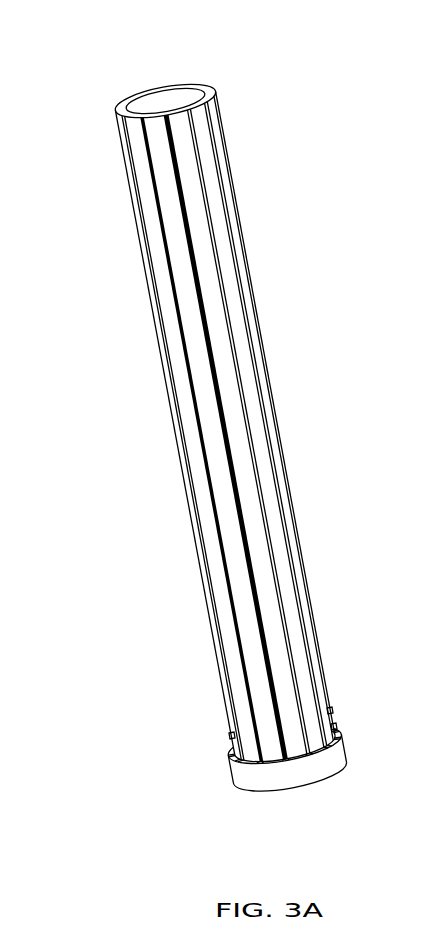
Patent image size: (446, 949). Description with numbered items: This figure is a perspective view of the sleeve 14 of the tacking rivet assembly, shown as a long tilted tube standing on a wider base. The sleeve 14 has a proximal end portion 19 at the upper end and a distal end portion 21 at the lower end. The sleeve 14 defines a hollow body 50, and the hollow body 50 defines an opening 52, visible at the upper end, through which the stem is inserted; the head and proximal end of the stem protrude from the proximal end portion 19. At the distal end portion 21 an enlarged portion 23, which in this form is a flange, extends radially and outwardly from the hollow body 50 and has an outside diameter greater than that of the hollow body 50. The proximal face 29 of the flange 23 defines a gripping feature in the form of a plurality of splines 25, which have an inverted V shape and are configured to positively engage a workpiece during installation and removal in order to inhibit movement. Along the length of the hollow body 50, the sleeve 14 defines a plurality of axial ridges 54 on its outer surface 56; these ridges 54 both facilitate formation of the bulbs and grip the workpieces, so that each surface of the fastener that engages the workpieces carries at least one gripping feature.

The sleeve 14 is at (295, 87).
The proximal end portion 19 is at (113, 117).
The distal end portion 21 is at (226, 759).
The enlarged portion 23 is at (337, 752).
The splines 25 is at (232, 735).
The proximal face 29 is at (300, 760).
The hollow body 50 is at (247, 385).
The opening 52 is at (162, 104).
The axial ridges 54 is at (218, 278).
The outer surface 56 is at (268, 507).